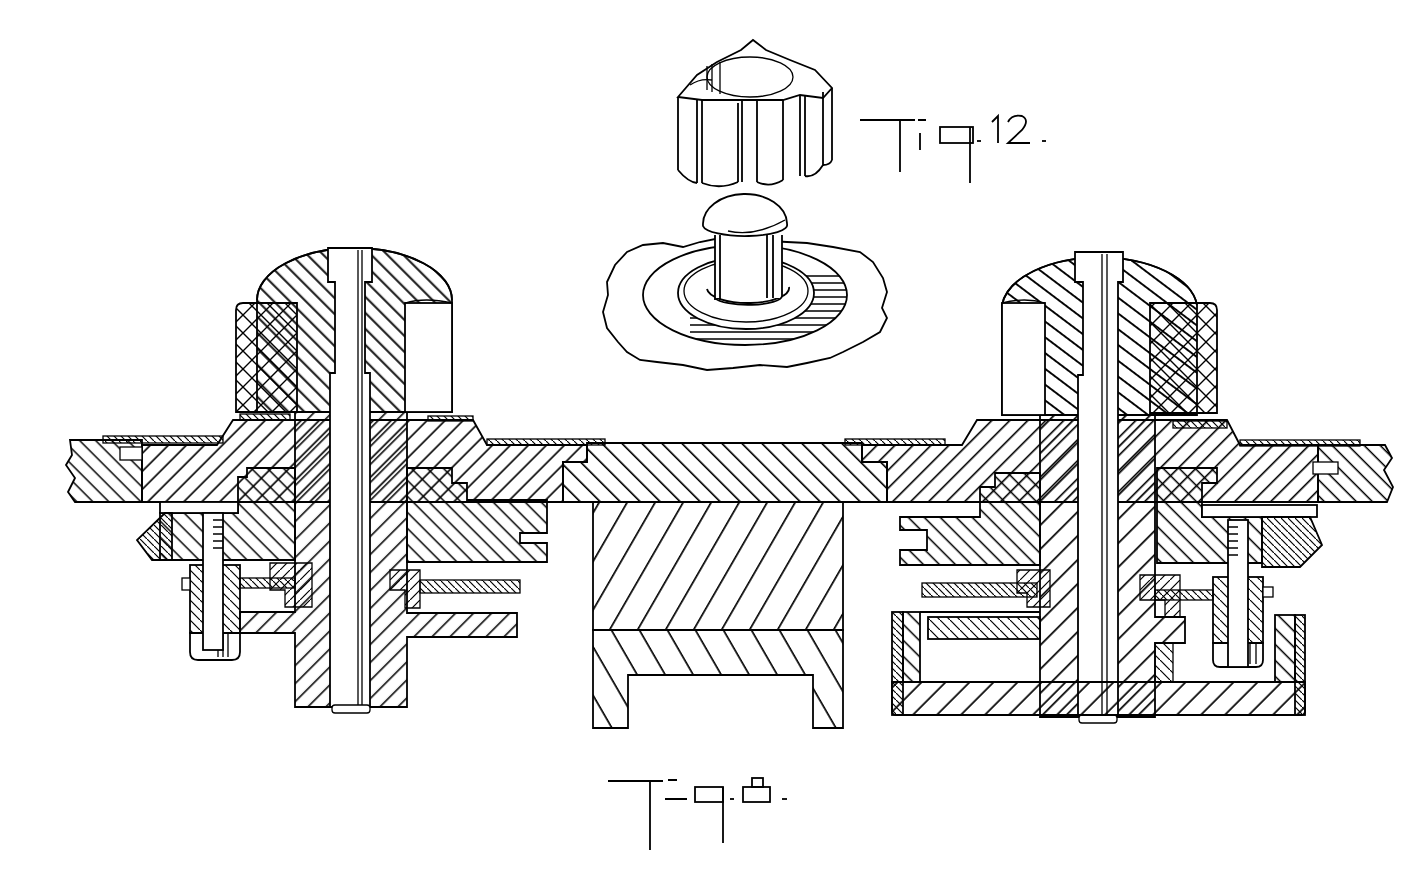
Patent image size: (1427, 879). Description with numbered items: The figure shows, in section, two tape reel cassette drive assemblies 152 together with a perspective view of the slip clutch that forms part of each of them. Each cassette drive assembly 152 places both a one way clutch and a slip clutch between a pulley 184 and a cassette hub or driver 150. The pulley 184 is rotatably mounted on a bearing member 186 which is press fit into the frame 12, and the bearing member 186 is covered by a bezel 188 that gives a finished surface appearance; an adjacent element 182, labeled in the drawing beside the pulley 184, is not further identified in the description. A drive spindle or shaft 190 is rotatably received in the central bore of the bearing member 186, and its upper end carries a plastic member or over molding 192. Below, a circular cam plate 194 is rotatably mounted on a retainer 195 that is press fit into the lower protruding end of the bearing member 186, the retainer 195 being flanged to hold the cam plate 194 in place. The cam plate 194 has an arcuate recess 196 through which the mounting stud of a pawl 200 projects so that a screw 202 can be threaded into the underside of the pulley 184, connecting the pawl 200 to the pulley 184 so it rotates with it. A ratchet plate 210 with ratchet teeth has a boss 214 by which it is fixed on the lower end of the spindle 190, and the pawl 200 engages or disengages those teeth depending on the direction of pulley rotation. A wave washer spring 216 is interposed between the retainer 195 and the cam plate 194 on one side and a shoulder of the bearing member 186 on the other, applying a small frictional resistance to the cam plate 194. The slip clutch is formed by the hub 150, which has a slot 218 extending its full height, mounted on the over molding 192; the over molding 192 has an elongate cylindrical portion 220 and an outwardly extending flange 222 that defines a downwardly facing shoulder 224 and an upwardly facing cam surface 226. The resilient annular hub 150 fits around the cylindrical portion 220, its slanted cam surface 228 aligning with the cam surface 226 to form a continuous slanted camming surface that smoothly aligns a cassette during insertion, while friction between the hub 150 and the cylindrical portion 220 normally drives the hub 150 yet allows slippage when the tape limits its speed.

In FIG. 8, the frame 12 is at (728, 446).
In FIG. 8, the cassette hub or driver 150 is at (1198, 348).
In FIG. 12, the cassette hub or driver 150 is at (717, 143).
In FIG. 8, the cassette drive assembly 152 is at (483, 365).
In FIG. 8, the wedge block 182 is at (150, 557).
In FIG. 8, the pulley 184 is at (160, 510).
In FIG. 8, the bearing member 186 is at (1257, 455).
In FIG. 8, the bezel 188 is at (543, 440).
In FIG. 8, the drive spindle or shaft 190 is at (1113, 253).
In FIG. 8, the plastic member or over molding 192 is at (292, 258).
In FIG. 12, the plastic member or over molding 192 is at (792, 243).
In FIG. 8, the circular cam plate 194 is at (182, 585).
In FIG. 8, the retainer 195 is at (1040, 613).
In FIG. 8, the arcuate recess 196 is at (347, 711).
In FIG. 8, the pawl 200 is at (195, 617).
In FIG. 8, the screw 202 is at (203, 657).
In FIG. 8, the ratchet plate 210 is at (953, 645).
In FIG. 8, the boss 214 is at (1050, 707).
In FIG. 8, the wave washer spring 216 is at (1023, 573).
In FIG. 12, the slot 218 is at (777, 173).
In FIG. 12, the elongate cylindrical portion 220 is at (720, 285).
In FIG. 12, the outwardly extending flange 222 is at (705, 222).
In FIG. 8, the downwardly facing shoulder 224 is at (420, 310).
In FIG. 8, the upwardly facing cam surface 226 is at (415, 273).
In FIG. 8, the slanted cam surface 228 is at (1028, 308).
In FIG. 12, the slanted cam surface 228 is at (697, 83).